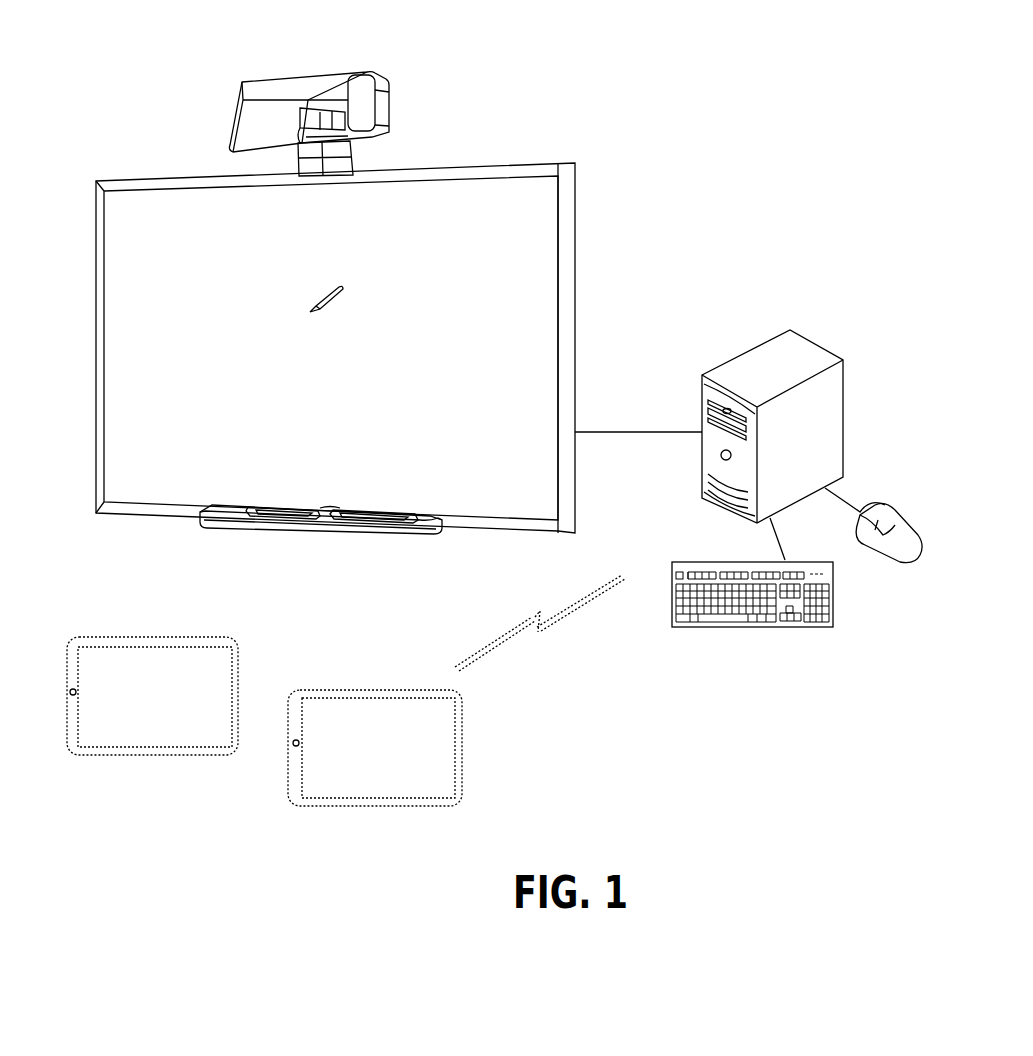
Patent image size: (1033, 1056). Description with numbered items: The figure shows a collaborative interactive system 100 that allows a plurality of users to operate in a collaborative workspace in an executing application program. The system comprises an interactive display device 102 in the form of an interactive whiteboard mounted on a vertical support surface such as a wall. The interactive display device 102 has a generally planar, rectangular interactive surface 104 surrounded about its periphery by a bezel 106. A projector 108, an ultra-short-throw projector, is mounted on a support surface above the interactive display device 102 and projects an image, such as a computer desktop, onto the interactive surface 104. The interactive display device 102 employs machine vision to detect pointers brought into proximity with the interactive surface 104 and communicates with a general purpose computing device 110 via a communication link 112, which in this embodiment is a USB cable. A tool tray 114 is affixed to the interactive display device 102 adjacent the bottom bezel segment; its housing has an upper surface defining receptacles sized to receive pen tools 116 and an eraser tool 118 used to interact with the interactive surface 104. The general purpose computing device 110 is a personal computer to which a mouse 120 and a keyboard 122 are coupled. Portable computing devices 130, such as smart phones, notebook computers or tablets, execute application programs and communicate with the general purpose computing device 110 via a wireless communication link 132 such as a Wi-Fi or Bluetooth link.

The collaborative interactive system 100 is at (788, 110).
The interactive display device 102 is at (590, 186).
The interactive surface 104 is at (528, 232).
The bezel 106 is at (572, 318).
The projector 108 is at (282, 90).
The general purpose computing device 110 is at (800, 332).
The communication link 112 is at (618, 433).
The tool tray 114 is at (335, 546).
The pen tool 116 is at (357, 523).
The eraser tool 118 is at (310, 520).
The mouse 120 is at (885, 508).
The keyboard 122 is at (838, 598).
The portable computing devices 130 is at (150, 757).
The communication link 132 is at (525, 625).